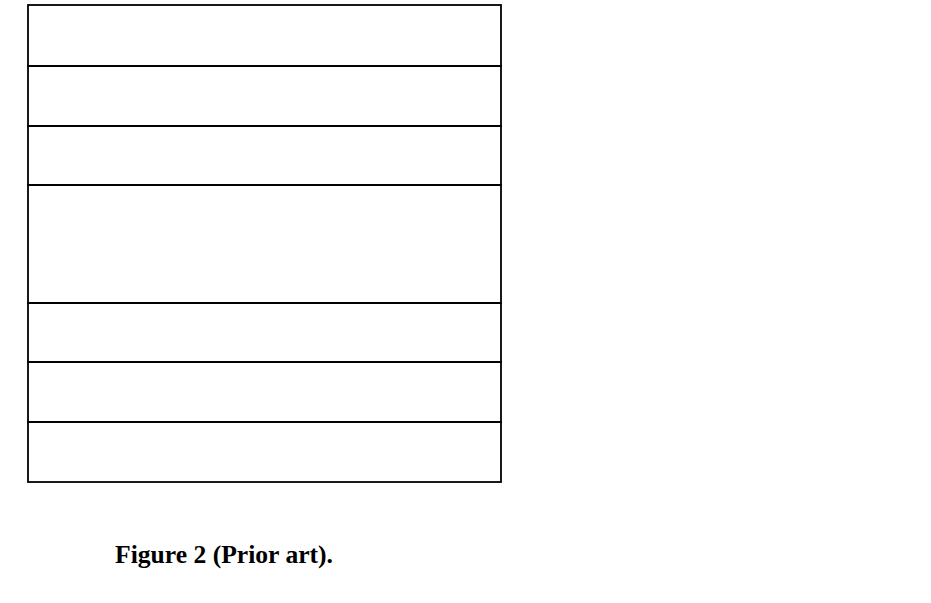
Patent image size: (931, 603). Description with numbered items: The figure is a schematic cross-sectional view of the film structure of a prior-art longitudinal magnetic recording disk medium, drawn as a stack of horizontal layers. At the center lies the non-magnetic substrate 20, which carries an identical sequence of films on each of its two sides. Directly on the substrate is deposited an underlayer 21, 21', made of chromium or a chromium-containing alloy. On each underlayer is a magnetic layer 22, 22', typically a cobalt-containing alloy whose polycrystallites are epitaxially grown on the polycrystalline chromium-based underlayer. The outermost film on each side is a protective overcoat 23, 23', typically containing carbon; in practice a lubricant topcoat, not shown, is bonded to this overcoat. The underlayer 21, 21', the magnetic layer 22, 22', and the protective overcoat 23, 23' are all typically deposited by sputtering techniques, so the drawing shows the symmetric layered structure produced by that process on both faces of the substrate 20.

The protective overcoat 23 is at (424, 35).
The magnetic layer 22 is at (401, 96).
The underlayer 21 is at (381, 155).
The non-magnetic substrate 20 is at (372, 244).
The underlayer 21' is at (385, 332).
The magnetic layer 22' is at (405, 392).
The protective overcoat 23' is at (427, 452).